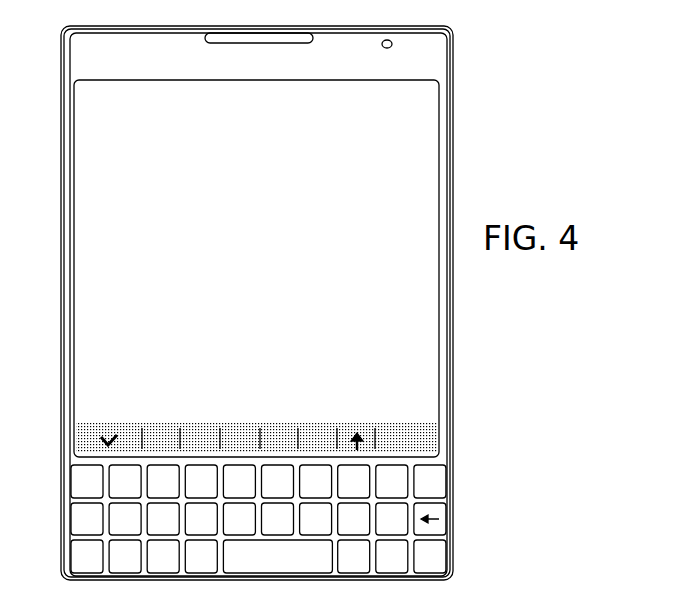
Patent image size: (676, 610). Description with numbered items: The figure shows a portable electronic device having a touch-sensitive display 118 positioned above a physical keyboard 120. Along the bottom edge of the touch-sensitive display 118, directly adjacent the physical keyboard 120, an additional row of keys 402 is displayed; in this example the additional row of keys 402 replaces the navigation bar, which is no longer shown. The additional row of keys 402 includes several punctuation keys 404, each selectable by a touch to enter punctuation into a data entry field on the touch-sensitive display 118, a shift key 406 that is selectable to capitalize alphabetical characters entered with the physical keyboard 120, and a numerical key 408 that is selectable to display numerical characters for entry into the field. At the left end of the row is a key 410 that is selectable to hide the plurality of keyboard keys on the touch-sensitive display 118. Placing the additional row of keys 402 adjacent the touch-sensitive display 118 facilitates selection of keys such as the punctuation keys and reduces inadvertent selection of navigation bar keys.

The touch-sensitive display 118 is at (440, 102).
The physical keyboard 120 is at (452, 480).
The additional row of keys 402 is at (438, 435).
The punctuation keys 404 is at (160, 437).
The shift key 406 is at (348, 432).
The numerical key 408 is at (385, 433).
The key to hide the plurality of keyboard keys 410 is at (98, 432).